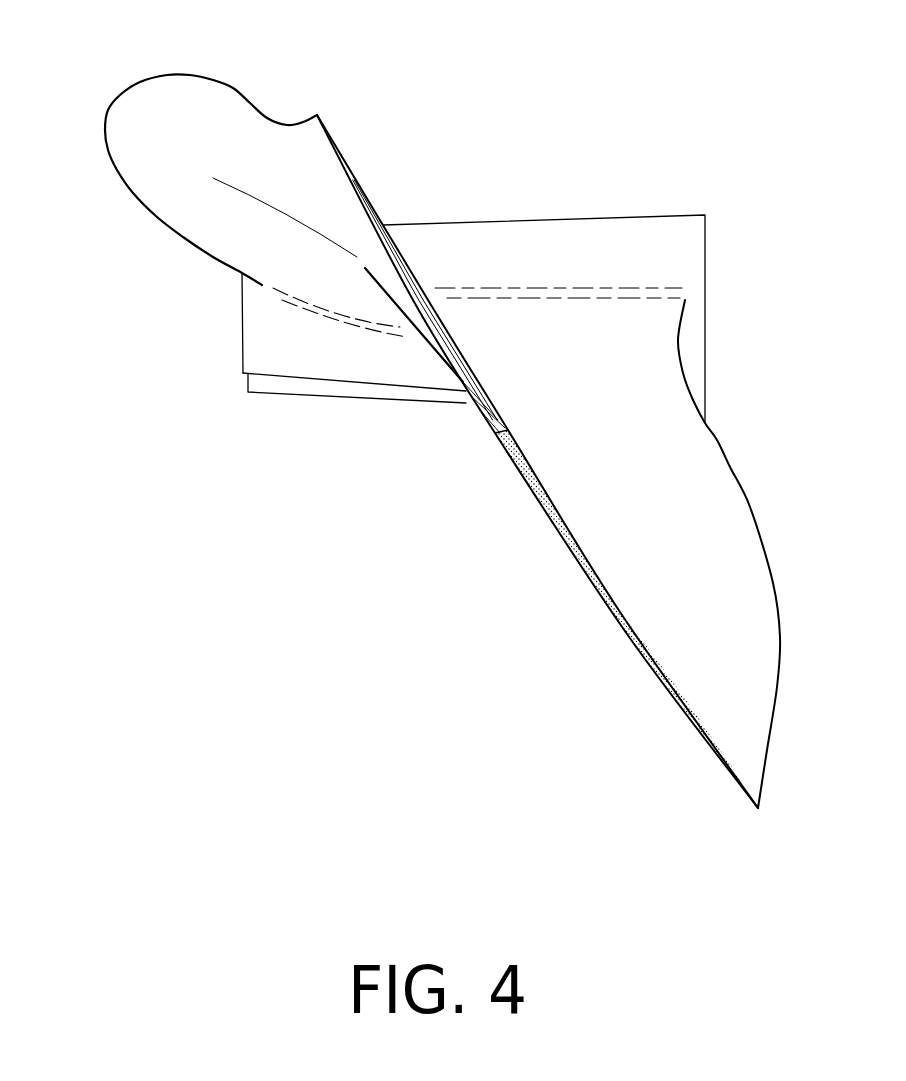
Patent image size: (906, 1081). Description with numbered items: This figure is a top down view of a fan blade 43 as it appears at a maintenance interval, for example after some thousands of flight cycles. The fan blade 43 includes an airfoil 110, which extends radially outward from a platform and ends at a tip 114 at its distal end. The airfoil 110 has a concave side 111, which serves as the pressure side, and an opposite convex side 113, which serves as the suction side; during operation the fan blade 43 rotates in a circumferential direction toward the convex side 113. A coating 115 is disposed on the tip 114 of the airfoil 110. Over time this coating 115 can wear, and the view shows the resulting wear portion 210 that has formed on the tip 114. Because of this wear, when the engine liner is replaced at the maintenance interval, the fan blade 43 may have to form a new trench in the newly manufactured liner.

The fan blade 43 is at (420, 86).
The airfoil 110 is at (593, 445).
The concave side 111 is at (645, 523).
The convex side 113 is at (532, 507).
The tip 114 is at (618, 612).
The coating 115 is at (587, 580).
The wear portion 210 is at (463, 403).